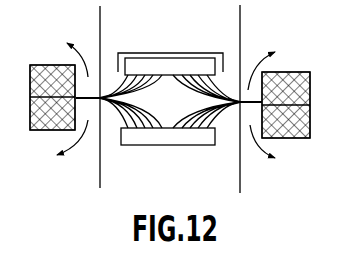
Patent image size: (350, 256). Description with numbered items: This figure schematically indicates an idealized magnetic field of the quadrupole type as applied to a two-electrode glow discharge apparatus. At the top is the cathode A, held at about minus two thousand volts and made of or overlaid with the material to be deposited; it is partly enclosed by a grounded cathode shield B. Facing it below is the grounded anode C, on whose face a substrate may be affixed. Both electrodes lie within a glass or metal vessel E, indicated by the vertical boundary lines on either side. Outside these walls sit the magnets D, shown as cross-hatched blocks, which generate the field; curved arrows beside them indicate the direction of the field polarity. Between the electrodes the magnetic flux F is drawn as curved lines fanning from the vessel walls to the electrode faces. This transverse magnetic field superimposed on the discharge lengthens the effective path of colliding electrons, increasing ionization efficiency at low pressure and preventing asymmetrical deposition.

The cathode A is at (199, 63).
The grounded cathode shield B is at (178, 53).
The grounded anode C is at (165, 145).
The magnets D is at (170, 101).
The glass or metal vessel E is at (100, 175).
The magnetic flux F is at (169, 101).